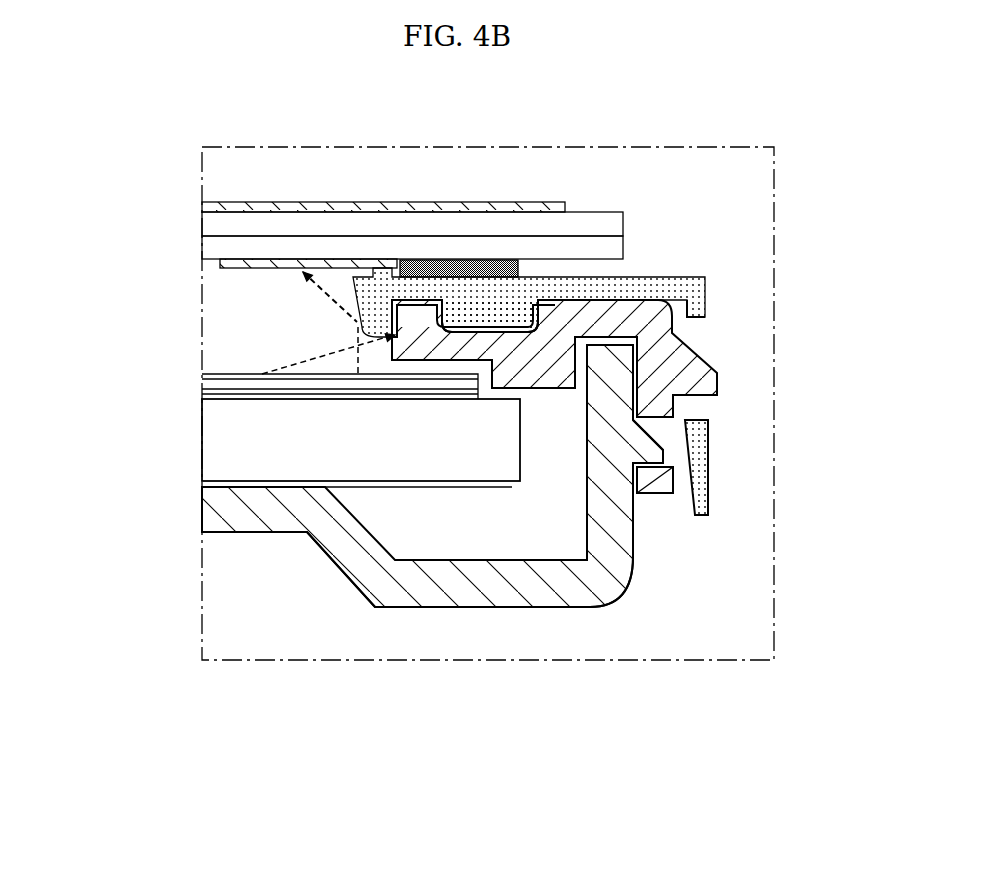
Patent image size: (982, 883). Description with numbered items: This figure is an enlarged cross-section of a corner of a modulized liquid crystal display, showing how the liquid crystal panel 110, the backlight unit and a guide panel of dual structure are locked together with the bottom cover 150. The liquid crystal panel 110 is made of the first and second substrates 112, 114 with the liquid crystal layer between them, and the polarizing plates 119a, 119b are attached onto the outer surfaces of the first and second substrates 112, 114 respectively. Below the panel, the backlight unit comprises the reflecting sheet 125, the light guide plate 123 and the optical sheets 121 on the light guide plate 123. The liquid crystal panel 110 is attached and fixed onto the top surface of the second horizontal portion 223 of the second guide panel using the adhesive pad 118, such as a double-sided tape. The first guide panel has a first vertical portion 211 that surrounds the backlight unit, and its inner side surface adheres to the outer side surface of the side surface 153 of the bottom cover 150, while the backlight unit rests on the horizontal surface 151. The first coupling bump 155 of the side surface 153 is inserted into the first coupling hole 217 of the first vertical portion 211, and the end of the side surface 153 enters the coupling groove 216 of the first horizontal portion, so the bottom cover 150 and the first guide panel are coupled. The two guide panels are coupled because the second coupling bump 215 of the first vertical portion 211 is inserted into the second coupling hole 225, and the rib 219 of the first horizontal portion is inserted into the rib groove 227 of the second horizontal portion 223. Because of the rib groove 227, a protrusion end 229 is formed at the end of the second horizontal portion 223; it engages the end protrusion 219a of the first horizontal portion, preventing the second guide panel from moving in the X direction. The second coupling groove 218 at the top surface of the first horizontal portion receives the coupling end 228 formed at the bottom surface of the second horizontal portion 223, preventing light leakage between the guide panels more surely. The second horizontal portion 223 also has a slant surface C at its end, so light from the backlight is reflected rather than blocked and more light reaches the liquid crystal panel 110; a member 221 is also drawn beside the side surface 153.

The liquid crystal panel 110 is at (336, 231).
The polarizing plate 119b is at (203, 203).
The second substrate 114 is at (203, 225).
The first substrate 112 is at (203, 252).
The polarizing plate 119a is at (218, 264).
The rib groove 227 is at (487, 262).
The second horizontal portion 223 is at (690, 285).
The adhesive pad 118 is at (465, 305).
The coupling end 228 is at (497, 310).
The second coupling groove 218 is at (531, 316).
The first vertical portion 211 is at (598, 348).
The second coupling bump 215 is at (618, 322).
The rib 219 is at (437, 289).
The end protrusion 219a is at (386, 348).
The coupling groove 216 is at (581, 388).
The first coupling hole 217 is at (674, 463).
The second coupling hole 225 is at (718, 322).
The bottom cover 150 is at (530, 561).
The horizontal surface 151 is at (547, 607).
The side surface 153 is at (617, 532).
The first coupling bump 155 is at (663, 437).
The sealing member 221 is at (705, 457).
The optical sheets 121 is at (202, 373).
The light guide plate 123 is at (210, 438).
The reflecting sheet 125 is at (210, 484).
The protrusion end 229 is at (362, 332).
The slant surface C is at (350, 320).